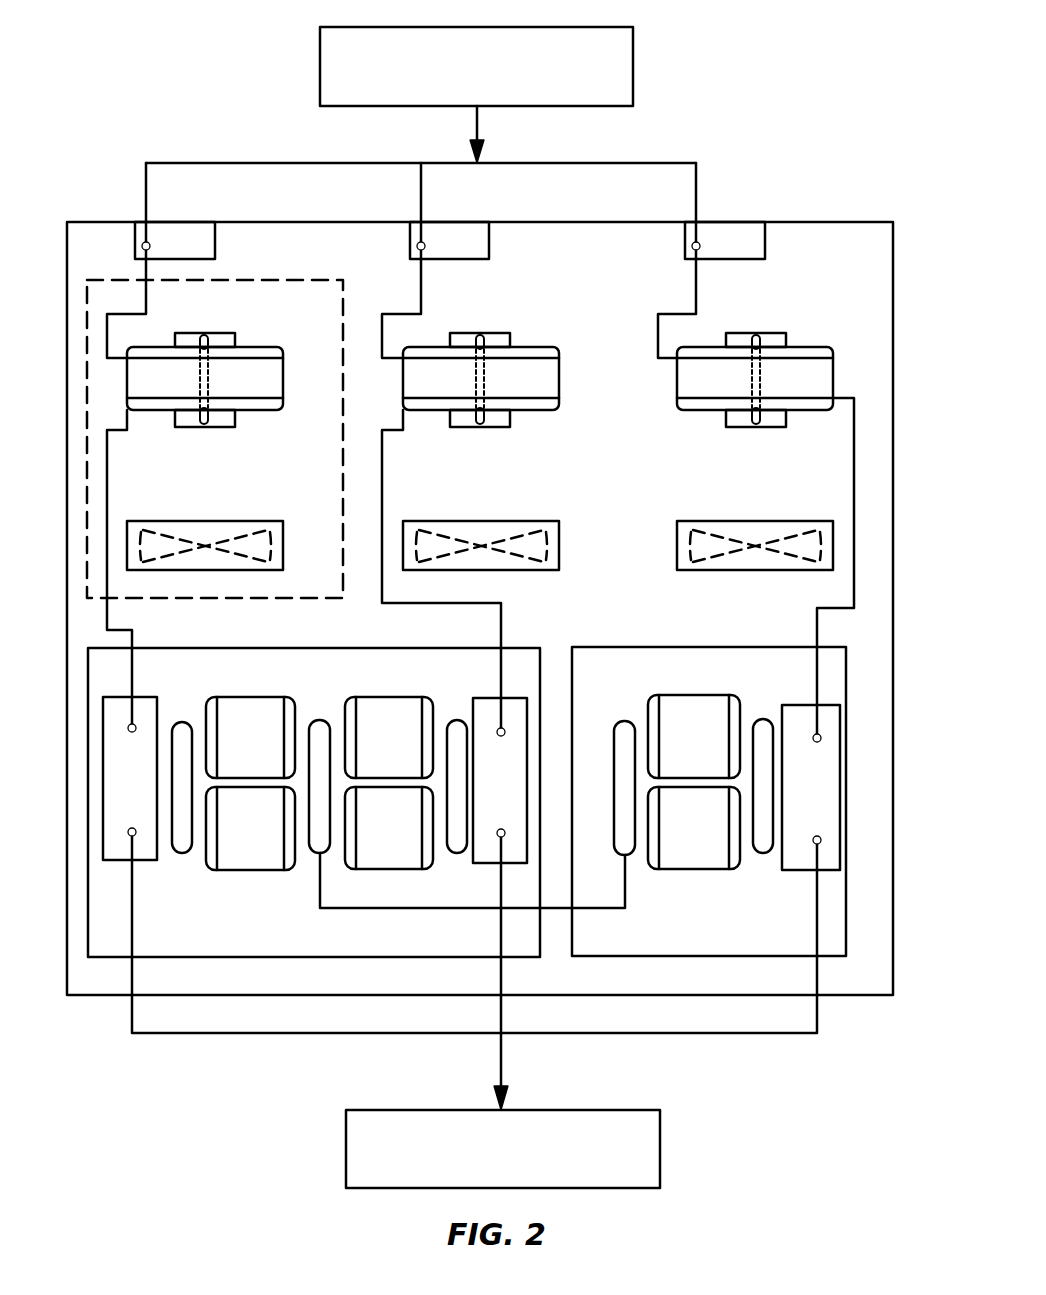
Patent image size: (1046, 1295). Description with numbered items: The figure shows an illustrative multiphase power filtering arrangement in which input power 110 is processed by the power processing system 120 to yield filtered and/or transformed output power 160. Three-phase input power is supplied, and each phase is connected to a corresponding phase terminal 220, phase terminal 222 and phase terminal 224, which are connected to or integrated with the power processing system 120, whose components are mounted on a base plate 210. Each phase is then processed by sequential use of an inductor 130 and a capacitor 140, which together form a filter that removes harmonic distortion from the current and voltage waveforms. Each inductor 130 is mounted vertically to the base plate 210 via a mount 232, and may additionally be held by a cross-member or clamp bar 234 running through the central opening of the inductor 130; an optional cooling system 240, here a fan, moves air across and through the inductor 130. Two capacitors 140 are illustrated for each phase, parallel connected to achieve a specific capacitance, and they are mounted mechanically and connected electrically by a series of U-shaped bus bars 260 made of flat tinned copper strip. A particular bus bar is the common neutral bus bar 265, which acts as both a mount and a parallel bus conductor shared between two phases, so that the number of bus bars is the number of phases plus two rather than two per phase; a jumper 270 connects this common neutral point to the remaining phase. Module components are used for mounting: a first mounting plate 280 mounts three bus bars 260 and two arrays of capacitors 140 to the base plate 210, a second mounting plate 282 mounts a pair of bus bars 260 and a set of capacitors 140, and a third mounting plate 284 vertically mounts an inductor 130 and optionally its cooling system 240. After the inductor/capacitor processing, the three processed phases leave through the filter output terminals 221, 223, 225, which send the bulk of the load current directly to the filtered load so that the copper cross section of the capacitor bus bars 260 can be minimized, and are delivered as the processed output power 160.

The input power 110 is at (593, 27).
The power processing system 120 is at (775, 100).
The inductor 130 is at (265, 347).
The capacitor 140 is at (235, 697).
The output power 160 is at (635, 1110).
The base plate 210 is at (863, 222).
The phase terminal U1 220 is at (195, 222).
The phase terminal V1 222 is at (470, 222).
The phase terminal W1 224 is at (745, 222).
The filter output terminal 221 is at (130, 778).
The filter output terminal 223 is at (500, 780).
The filter output terminal 225 is at (811, 787).
The mount 232 is at (190, 333).
The clamp bar 234 is at (212, 381).
The cooling system 240 is at (265, 521).
The bus bar 260 is at (182, 855).
The common neutral bus bar 265 is at (320, 720).
The jumper 270 is at (468, 910).
The first mounting plate 280 is at (518, 648).
The second mounting plate 282 is at (700, 647).
The third mounting plate 284 is at (316, 604).